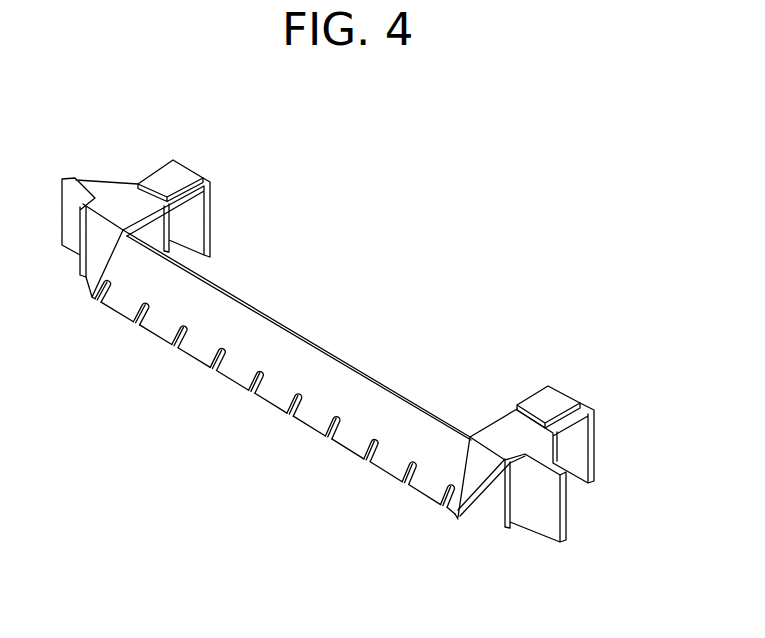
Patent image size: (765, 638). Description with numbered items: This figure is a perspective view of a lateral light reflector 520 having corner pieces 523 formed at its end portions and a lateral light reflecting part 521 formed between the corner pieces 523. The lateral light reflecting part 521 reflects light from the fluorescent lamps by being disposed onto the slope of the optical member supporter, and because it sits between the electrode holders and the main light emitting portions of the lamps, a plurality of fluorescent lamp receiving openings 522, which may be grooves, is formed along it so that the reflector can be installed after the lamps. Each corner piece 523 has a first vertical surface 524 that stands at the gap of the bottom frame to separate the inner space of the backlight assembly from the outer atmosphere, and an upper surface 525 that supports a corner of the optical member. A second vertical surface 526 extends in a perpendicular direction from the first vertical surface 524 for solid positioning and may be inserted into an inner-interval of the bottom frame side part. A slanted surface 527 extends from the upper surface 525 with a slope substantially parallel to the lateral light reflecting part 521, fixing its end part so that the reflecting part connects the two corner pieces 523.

The lateral light reflector 520 is at (413, 110).
The lateral light reflecting part 521 is at (296, 352).
The fluorescent lamp receiving openings 522 is at (290, 402).
The corner piece 523 is at (557, 395).
The first vertical surface 524 is at (517, 517).
The upper surface 525 is at (493, 433).
The second vertical surface 526 is at (567, 508).
The slanted surface 527 is at (457, 518).